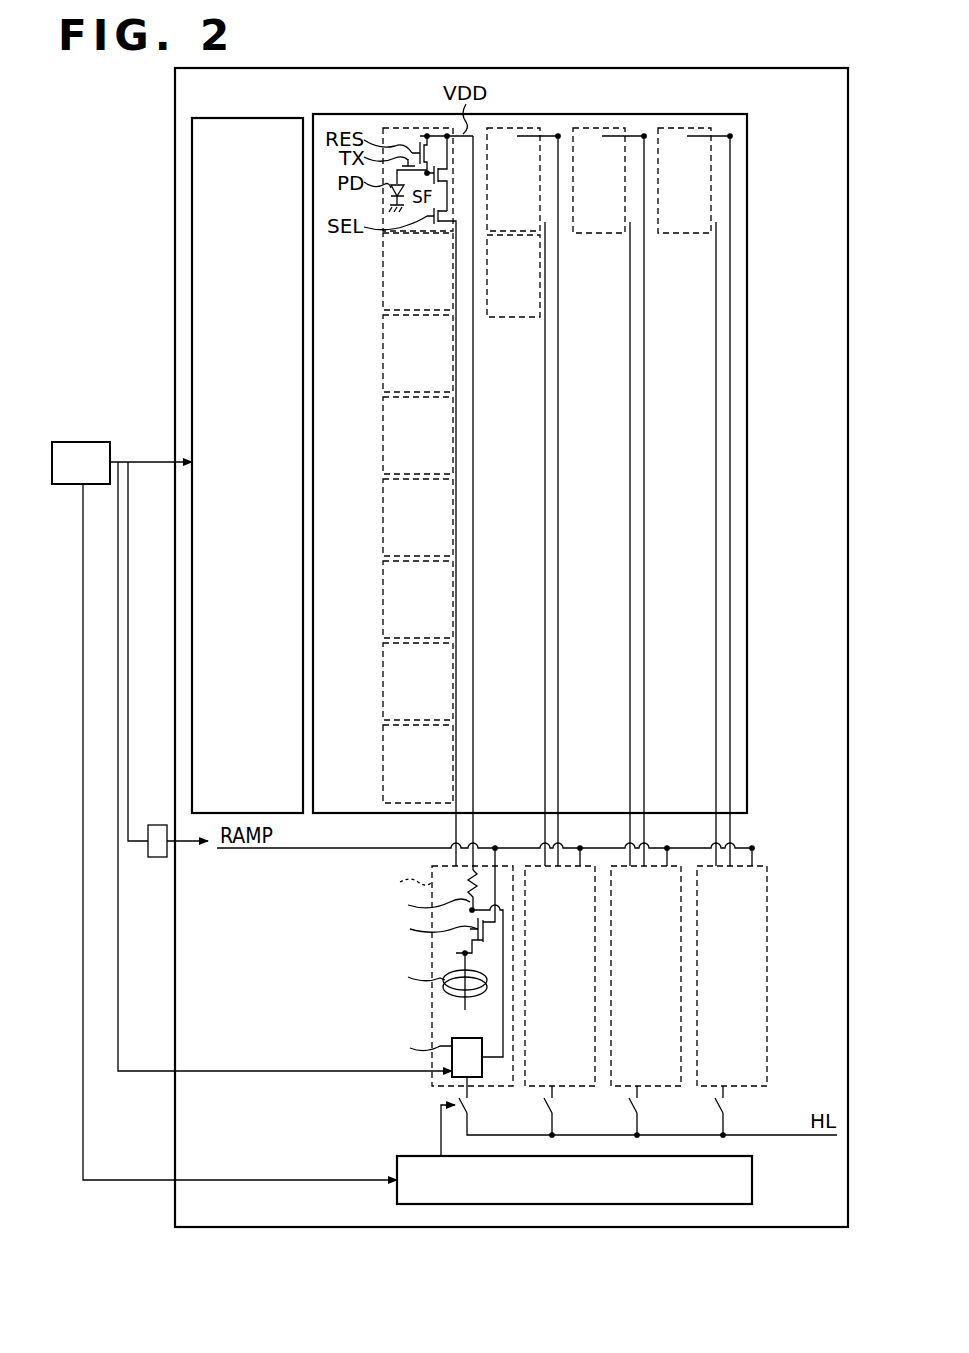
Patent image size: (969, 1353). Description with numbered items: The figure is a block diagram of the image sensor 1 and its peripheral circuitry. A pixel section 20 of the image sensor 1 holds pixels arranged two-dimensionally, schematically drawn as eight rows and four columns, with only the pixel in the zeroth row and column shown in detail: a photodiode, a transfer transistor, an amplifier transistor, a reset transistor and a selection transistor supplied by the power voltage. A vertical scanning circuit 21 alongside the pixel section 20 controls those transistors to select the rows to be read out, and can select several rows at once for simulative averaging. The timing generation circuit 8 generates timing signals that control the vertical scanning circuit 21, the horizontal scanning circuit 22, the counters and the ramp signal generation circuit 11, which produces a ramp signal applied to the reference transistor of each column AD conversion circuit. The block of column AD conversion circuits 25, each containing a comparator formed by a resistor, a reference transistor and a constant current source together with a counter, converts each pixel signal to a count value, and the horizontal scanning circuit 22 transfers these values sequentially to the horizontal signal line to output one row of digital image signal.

The image sensor 1 is at (800, 72).
The timing generation circuit 8 is at (83, 442).
The ramp signal generation circuit 11 is at (157, 859).
The pixel section 20 is at (747, 188).
The vertical scanning circuit 21 is at (237, 118).
The horizontal scanning circuit 22 is at (752, 1180).
The AD conversion unit (column AD converters) 25 is at (767, 905).